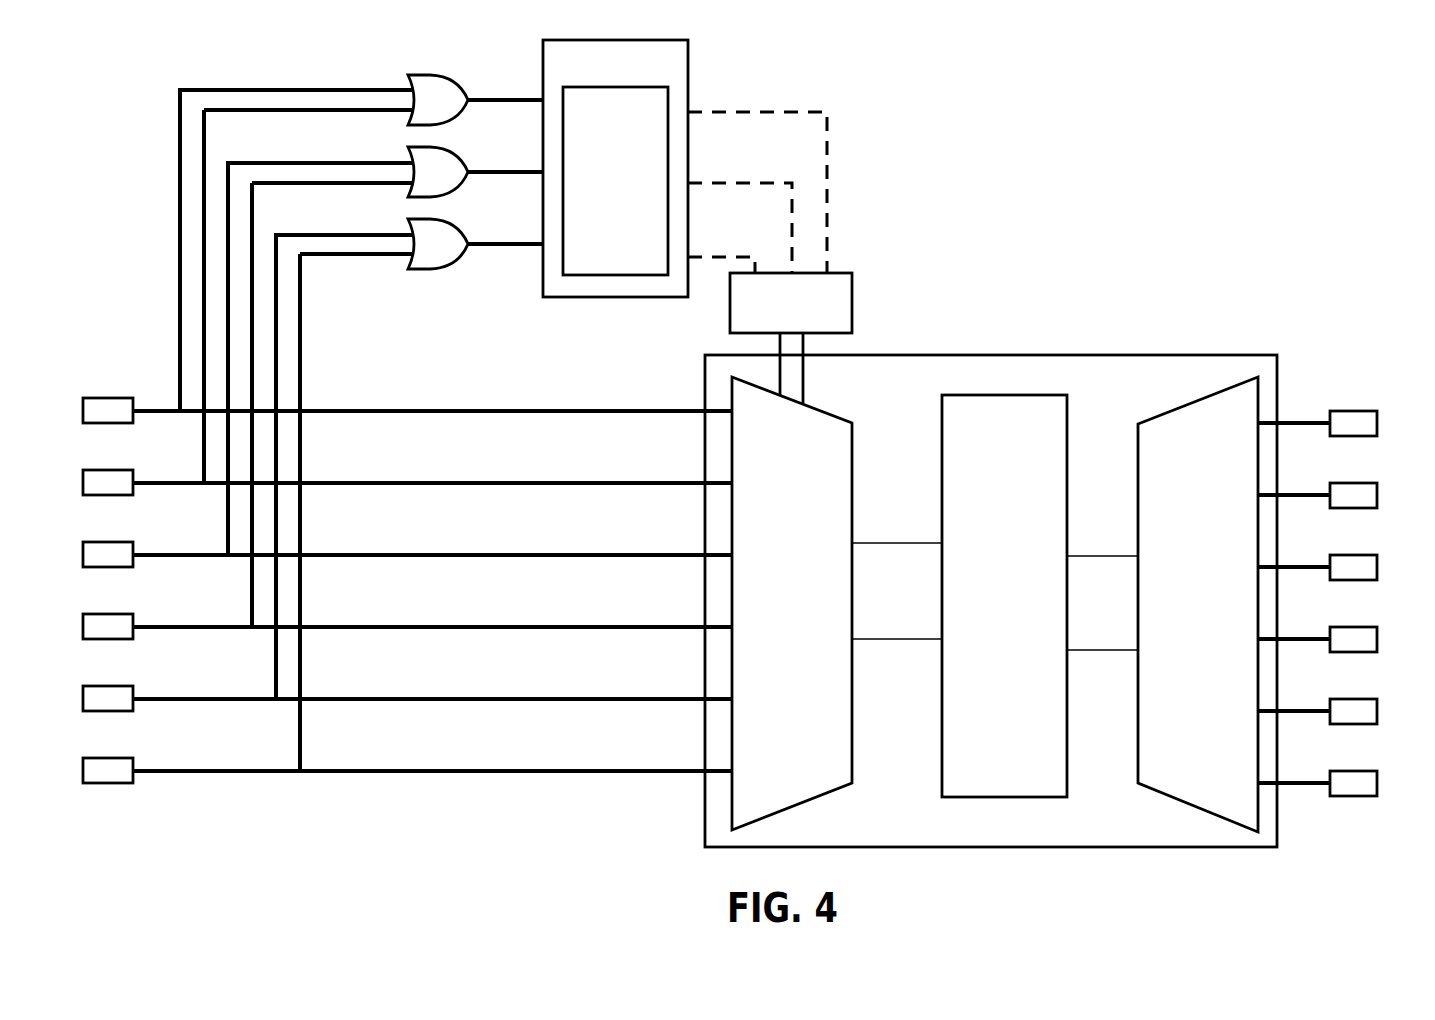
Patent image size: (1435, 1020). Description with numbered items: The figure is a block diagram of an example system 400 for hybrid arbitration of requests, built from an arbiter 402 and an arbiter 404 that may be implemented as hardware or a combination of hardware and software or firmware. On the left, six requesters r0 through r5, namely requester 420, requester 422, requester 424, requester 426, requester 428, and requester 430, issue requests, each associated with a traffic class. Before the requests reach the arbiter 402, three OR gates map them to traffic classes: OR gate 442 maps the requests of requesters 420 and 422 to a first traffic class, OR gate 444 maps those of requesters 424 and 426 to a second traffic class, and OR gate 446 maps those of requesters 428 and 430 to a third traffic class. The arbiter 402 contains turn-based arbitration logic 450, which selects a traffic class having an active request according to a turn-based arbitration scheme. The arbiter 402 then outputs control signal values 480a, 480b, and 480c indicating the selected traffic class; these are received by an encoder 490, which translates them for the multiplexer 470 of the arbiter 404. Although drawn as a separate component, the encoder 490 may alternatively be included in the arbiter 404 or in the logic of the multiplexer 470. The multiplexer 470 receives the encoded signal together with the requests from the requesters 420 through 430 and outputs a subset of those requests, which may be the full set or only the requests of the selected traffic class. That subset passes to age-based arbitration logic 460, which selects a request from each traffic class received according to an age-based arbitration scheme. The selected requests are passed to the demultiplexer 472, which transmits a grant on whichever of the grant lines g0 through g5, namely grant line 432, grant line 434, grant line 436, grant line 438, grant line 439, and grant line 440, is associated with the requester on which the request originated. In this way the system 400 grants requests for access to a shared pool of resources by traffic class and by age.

The system 400 is at (1313, 848).
The arbiter 402 is at (640, 163).
The arbiter 404 is at (991, 601).
The requester r0 420 is at (82, 414).
The requester r1 422 is at (82, 486).
The requester r2 424 is at (82, 558).
The requester r3 426 is at (82, 630).
The requester r4 428 is at (82, 702).
The requester r5 430 is at (82, 774).
The grant line g0 432 is at (1362, 412).
The grant line g1 434 is at (1362, 484).
The grant line g2 436 is at (1362, 556).
The grant line g3 438 is at (1362, 628).
The grant line g4 439 is at (1362, 700).
The grant line g5 440 is at (1362, 772).
The OR gate 442 is at (475, 100).
The OR gate 444 is at (475, 172).
The OR gate 446 is at (475, 244).
The turn-based arbitration logic 450 is at (668, 178).
The age-based arbitration logic 460 is at (995, 797).
The multiplexer 470 is at (830, 797).
The demultiplexer 472 is at (1185, 805).
The control signal value 480a is at (795, 112).
The control signal value 480b is at (723, 183).
The control signal value 480c is at (700, 257).
The encoder 490 is at (852, 287).